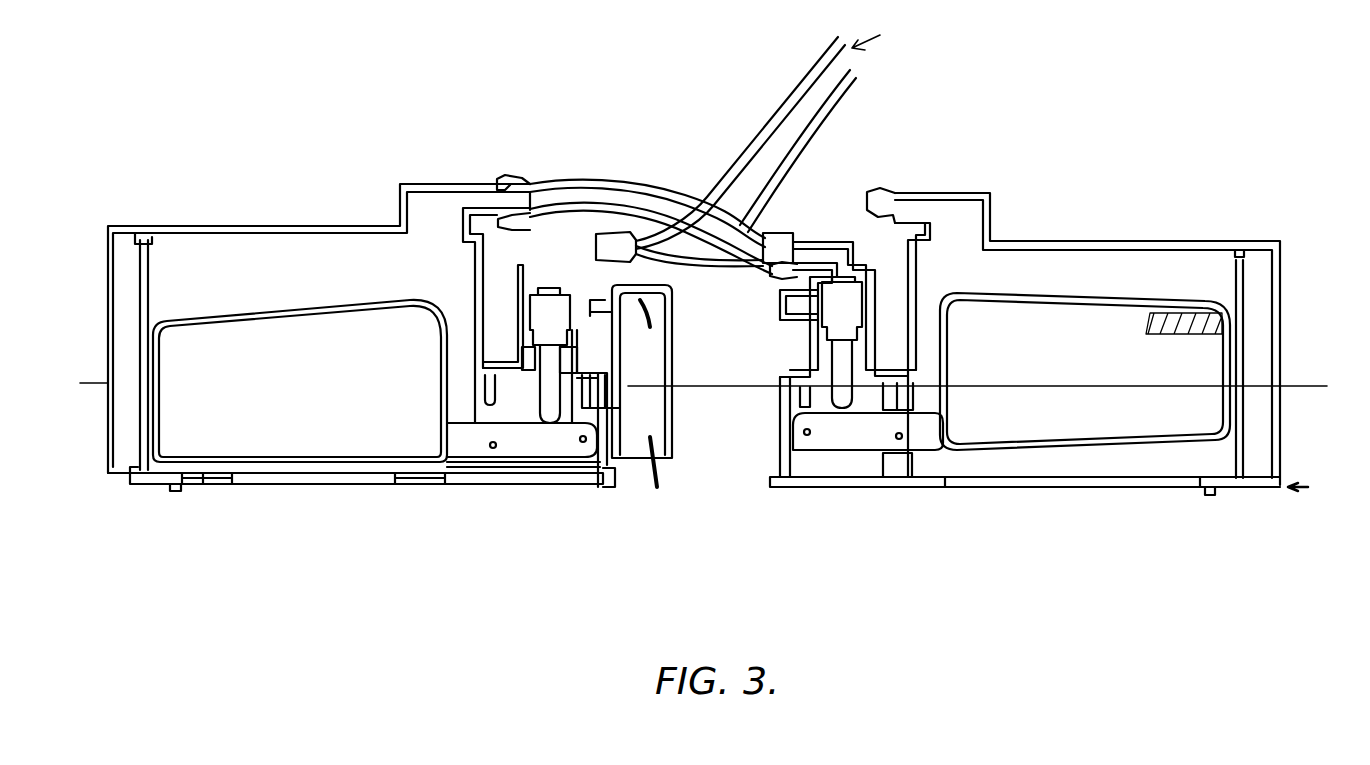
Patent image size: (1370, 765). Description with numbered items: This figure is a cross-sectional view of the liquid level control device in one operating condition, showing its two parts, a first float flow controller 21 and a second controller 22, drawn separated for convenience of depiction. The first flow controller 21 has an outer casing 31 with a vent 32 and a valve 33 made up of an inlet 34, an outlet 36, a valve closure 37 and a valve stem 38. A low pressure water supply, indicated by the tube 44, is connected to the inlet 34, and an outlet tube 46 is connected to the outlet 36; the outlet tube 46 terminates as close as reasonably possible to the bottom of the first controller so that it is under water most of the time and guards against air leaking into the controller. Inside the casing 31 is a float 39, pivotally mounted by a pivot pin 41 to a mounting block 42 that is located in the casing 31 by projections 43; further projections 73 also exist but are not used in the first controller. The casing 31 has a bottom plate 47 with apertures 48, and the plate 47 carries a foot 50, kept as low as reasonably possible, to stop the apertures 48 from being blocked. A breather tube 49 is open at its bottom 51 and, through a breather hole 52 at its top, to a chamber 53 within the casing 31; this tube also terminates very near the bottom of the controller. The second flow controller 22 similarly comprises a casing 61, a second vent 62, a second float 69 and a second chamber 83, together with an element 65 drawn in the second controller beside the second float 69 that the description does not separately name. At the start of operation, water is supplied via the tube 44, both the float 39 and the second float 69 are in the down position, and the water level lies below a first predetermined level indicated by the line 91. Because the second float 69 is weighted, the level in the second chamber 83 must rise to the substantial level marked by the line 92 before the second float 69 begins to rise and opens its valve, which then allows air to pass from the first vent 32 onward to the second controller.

The first float flow controller 21 is at (300, 548).
The second controller 22 is at (1086, 533).
The outer casing 31 is at (232, 226).
The vent 32 is at (480, 183).
The valve 33 is at (580, 347).
The inlet 34 is at (587, 245).
The outlet 36 is at (640, 282).
The valve closure 37 is at (530, 300).
The valve stem 38 is at (550, 332).
The float 39 is at (253, 457).
The pivot pin 41 is at (605, 470).
The mounting block 42 is at (587, 462).
The projections 43 is at (607, 405).
The tube 44 is at (776, 100).
The outlet tube 46 is at (672, 428).
The bottom plate 47 is at (460, 484).
The apertures 48 is at (203, 480).
The breather tube 49 is at (123, 290).
The foot 50 is at (177, 493).
The bottom 51 is at (120, 478).
The breather hole 52 is at (158, 236).
The chamber 53 is at (300, 363).
The casing 61 is at (1097, 241).
The second vent 62 is at (920, 193).
The solenoid 65 is at (812, 335).
The second float 69 is at (977, 453).
The projections 73 is at (487, 395).
The second chamber 83 is at (1085, 357).
The line 91 is at (1312, 488).
The line 92 is at (1313, 388).